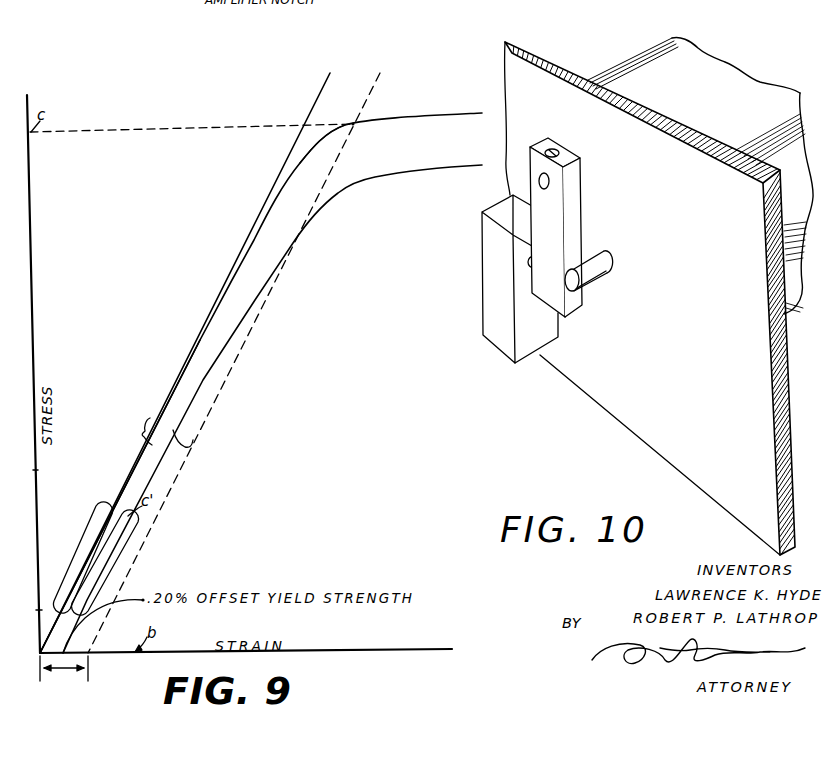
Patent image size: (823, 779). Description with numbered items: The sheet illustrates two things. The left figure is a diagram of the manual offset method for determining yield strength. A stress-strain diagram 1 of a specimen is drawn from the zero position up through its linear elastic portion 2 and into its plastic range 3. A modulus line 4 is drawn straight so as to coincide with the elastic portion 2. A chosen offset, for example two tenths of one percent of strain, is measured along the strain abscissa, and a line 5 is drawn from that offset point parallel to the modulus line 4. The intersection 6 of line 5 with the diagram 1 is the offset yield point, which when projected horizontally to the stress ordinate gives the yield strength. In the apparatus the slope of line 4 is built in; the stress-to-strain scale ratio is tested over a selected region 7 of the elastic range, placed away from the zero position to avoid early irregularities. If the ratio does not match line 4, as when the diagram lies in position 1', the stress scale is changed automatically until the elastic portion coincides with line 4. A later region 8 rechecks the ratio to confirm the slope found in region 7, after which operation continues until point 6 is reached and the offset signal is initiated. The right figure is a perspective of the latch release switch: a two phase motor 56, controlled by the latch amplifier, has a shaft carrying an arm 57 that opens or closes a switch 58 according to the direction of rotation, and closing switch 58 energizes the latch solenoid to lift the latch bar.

In FIG. 9, the stress-strain diagram 1 is at (261, 383).
In FIG. 9, the offset-scale stress-strain diagram position 1' is at (272, 409).
In FIG. 9, the linear elastic portion 2 is at (131, 470).
In FIG. 9, the plastic range 3 is at (328, 137).
In FIG. 9, the modulus line 4 is at (311, 112).
In FIG. 9, the offset line 5 is at (238, 353).
In FIG. 9, the offset yield point 6 is at (353, 123).
In FIG. 9, the first selected region 7 is at (82, 552).
In FIG. 9, the second selected region 8 is at (143, 435).
In FIG. 10, the two phase motor 56 is at (683, 59).
In FIG. 10, the arm 57 is at (553, 207).
In FIG. 10, the switch 58 is at (520, 268).